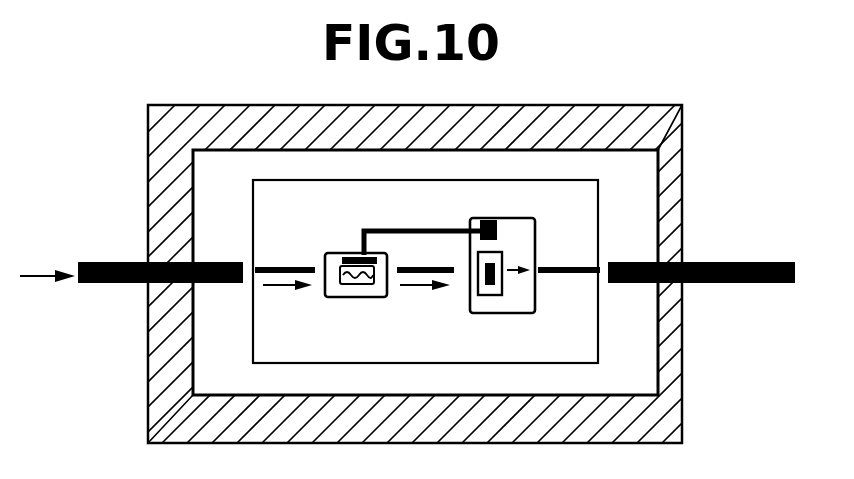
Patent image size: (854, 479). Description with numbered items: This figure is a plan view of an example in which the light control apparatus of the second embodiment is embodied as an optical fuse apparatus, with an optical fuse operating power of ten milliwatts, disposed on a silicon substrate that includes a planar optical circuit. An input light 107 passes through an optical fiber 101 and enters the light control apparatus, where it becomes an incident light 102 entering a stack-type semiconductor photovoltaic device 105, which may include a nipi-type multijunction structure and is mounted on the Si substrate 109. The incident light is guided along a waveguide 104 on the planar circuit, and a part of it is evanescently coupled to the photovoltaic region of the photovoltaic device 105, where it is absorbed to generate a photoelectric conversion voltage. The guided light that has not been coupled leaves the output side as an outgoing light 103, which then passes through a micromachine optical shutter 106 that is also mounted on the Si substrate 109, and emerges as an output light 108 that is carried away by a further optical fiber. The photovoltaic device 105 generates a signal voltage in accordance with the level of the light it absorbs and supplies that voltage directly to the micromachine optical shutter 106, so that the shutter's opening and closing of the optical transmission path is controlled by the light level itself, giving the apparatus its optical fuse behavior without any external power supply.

The optical fiber 101 is at (122, 266).
The incident light 102 is at (284, 290).
The outgoing light 103 is at (422, 290).
The waveguide 104 is at (285, 262).
The stack-type semiconductor photovoltaic device 105 is at (352, 251).
The micromachine (optical shutter) 106 is at (510, 228).
The input light 107 is at (36, 282).
The output light 108 is at (807, 263).
The planar circuit mounted Si substrate 109 is at (594, 188).